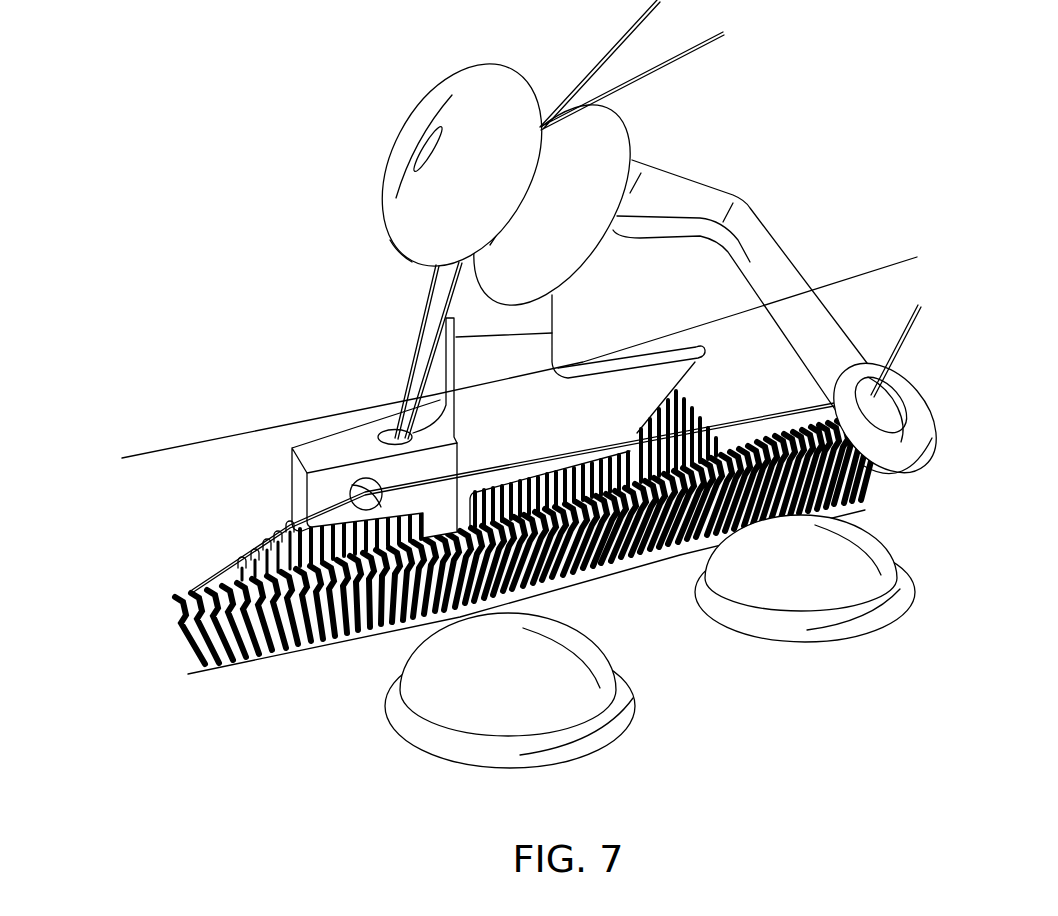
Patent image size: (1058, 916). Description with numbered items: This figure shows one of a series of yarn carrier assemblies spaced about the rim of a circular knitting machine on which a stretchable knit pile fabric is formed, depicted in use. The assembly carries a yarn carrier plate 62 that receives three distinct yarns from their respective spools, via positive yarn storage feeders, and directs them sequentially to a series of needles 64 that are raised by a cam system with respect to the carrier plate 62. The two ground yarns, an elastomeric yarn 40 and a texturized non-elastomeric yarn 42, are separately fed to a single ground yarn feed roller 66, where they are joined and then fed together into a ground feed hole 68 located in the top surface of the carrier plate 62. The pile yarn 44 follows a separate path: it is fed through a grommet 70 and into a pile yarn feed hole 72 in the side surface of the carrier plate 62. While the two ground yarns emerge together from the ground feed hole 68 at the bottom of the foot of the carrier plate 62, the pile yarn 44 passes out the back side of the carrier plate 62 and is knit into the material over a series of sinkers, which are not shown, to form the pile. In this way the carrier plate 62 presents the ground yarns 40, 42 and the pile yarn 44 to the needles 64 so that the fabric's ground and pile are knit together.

The elastomeric yarn 40 is at (446, 317).
The texturized non-elastomeric yarn 42 is at (413, 357).
The pile yarn 44 is at (243, 557).
The yarn carrier plate 62 is at (662, 357).
The needles 64 is at (273, 530).
The ground yarn feed roller 66 is at (403, 236).
The ground feed hole 68 is at (380, 430).
The grommet 70 is at (912, 398).
The pile yarn feed hole 72 is at (358, 487).